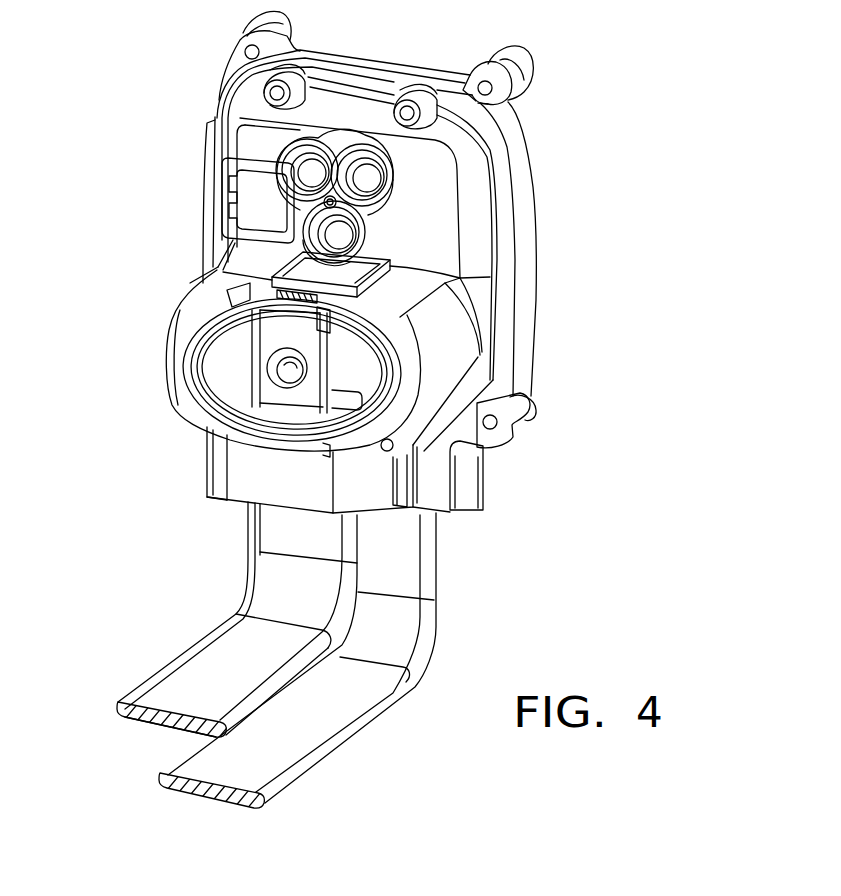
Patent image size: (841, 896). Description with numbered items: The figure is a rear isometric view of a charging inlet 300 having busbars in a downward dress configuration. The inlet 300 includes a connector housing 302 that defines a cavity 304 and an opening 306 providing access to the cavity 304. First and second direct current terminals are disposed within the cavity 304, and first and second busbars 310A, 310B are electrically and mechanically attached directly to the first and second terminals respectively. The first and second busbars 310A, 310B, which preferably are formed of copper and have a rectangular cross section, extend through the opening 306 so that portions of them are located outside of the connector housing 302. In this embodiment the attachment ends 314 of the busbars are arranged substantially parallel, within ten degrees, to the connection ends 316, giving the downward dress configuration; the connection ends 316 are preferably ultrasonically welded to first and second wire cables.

The inlet 300 is at (590, 46).
The connector housing 302 is at (513, 242).
The cavity 304 is at (217, 373).
The attachment ends 314 is at (277, 398).
The opening 306 is at (238, 500).
The first busbar 310A is at (365, 680).
The second busbar 310B is at (228, 647).
The connection ends 316 is at (197, 763).